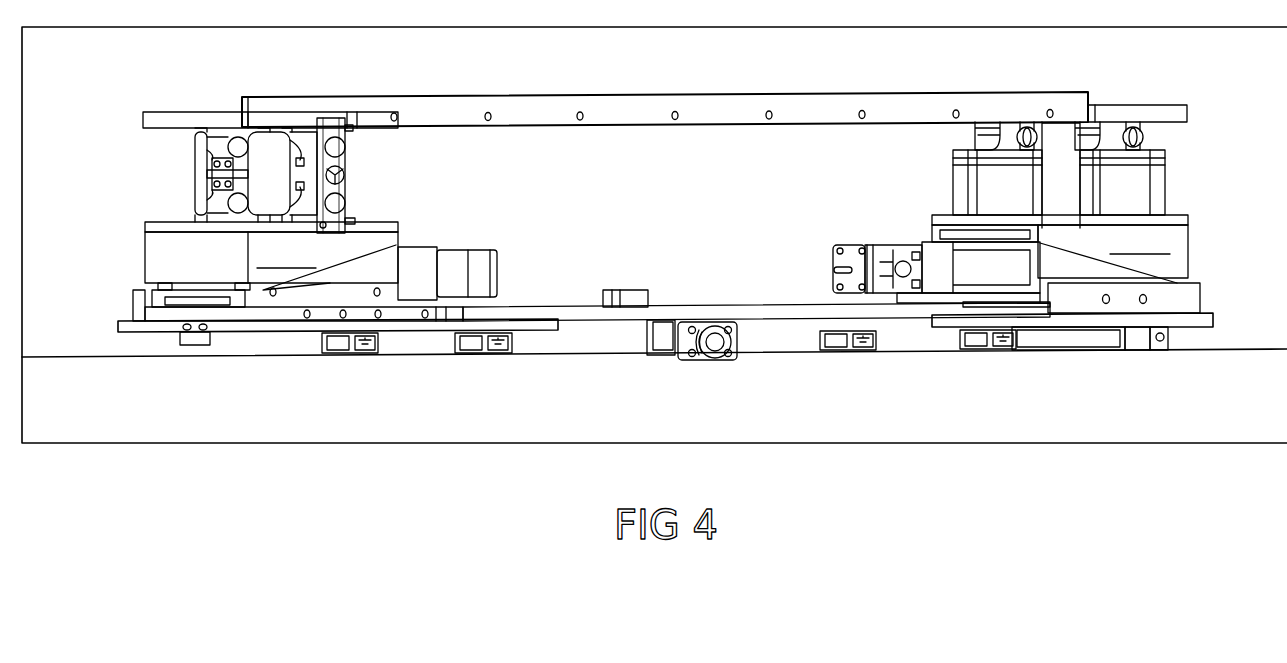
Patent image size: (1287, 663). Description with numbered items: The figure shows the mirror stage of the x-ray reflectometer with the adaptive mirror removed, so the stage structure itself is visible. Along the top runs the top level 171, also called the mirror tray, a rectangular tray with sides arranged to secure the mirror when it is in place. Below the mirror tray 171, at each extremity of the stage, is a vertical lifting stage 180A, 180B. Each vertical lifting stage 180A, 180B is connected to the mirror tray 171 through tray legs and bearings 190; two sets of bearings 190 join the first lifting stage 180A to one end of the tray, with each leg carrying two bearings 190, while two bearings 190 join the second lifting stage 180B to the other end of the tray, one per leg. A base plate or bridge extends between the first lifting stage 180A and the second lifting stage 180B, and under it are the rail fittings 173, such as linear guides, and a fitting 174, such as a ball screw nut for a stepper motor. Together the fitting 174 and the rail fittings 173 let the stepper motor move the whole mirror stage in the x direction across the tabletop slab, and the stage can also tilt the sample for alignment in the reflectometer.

The top level 171 is at (423, 113).
The rail fittings 173 is at (355, 357).
The fitting 174 is at (712, 358).
The first vertical lifting stage 180A is at (315, 271).
The second vertical lifting stage 180B is at (1016, 264).
The bearings 190 is at (337, 147).